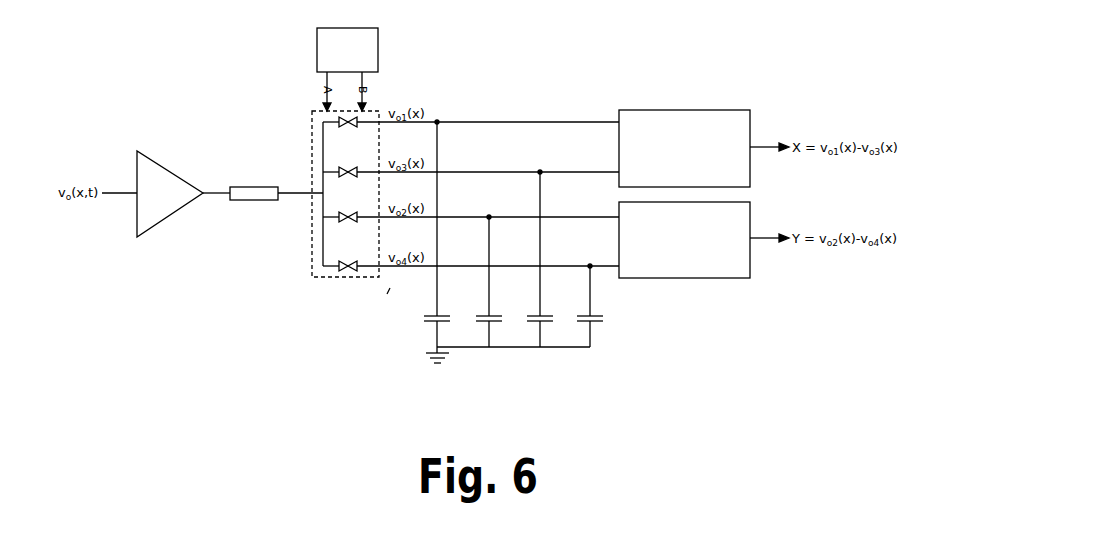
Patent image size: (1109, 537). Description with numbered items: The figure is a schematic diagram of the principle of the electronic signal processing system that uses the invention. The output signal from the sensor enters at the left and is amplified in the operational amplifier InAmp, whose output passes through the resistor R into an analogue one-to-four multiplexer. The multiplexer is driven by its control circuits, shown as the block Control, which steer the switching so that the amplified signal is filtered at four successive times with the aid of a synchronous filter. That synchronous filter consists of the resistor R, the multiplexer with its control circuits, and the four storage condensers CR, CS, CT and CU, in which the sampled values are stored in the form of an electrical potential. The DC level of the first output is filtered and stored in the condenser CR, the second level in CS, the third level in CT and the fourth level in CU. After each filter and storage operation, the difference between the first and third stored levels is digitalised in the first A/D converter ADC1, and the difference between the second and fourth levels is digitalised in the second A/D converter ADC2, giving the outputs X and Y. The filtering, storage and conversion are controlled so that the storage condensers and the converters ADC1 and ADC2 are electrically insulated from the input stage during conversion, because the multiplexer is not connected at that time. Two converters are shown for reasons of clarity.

The operational amplifier InAmp is at (170, 194).
The resistor R is at (254, 193).
The control circuits Control is at (347, 50).
The storage condenser CR is at (428, 237).
The storage condenser CS is at (480, 282).
The storage condenser CT is at (532, 259).
The storage condenser CU is at (582, 306).
The first A/D converter ADC1 is at (684, 148).
The second A/D converter ADC2 is at (684, 240).